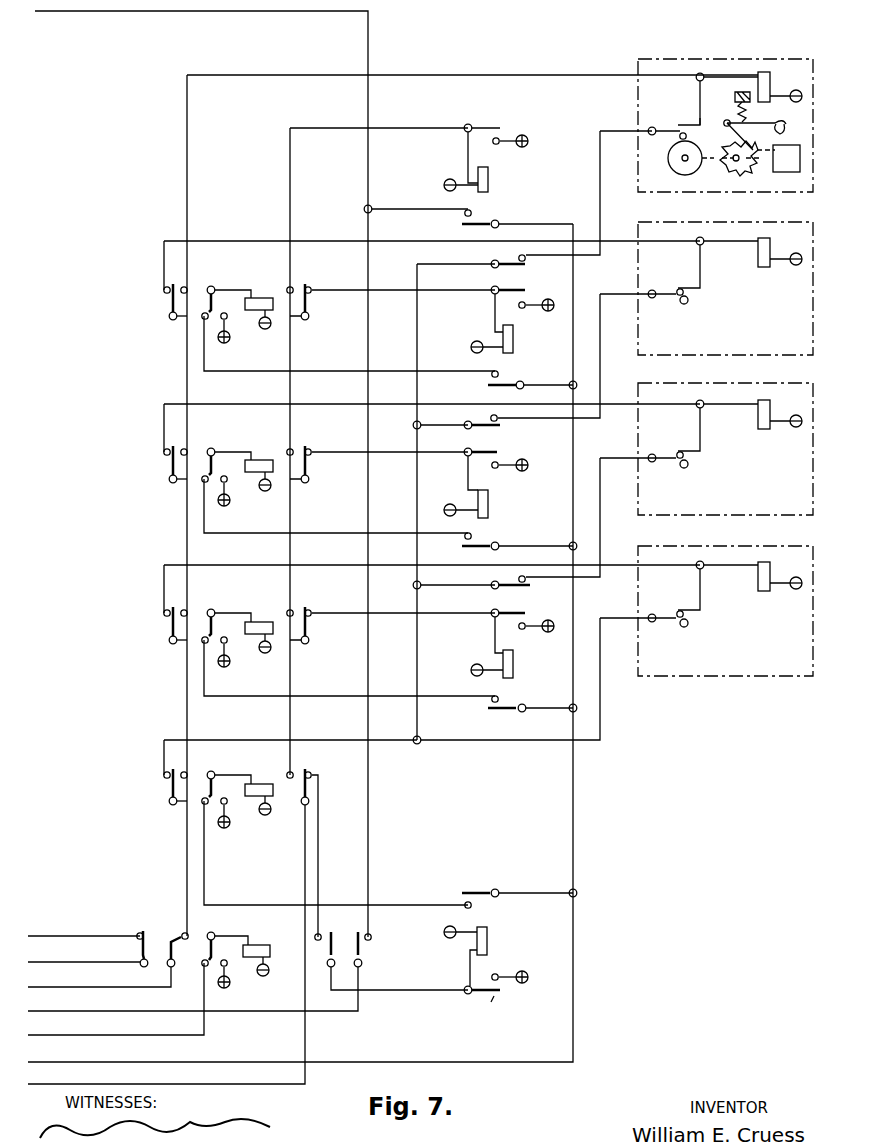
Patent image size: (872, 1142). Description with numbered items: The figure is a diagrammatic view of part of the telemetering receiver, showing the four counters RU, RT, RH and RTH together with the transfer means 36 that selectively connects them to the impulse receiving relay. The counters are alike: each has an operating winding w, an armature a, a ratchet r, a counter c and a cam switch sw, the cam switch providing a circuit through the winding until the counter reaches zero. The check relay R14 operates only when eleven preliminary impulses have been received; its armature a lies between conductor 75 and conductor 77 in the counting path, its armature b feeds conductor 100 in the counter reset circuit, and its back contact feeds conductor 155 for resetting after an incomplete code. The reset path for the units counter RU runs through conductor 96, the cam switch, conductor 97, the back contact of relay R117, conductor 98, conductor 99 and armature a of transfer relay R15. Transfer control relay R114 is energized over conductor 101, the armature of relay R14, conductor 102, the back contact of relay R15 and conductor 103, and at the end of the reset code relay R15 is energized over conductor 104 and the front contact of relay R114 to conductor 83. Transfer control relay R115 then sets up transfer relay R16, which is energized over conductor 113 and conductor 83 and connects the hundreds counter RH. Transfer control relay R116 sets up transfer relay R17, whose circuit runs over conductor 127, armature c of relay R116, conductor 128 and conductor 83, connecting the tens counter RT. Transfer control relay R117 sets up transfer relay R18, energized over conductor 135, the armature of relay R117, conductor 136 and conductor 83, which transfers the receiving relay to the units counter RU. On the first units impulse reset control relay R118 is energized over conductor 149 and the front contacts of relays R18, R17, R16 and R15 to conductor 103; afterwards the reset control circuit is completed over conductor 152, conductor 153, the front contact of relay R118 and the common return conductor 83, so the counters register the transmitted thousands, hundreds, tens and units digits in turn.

The transfer means 36 is at (420, 53).
The conductor 152 is at (367, 68).
The conductor 149 is at (393, 134).
The reset control relay R118 is at (472, 178).
The conductor 153 is at (437, 216).
The conductor 97 is at (601, 205).
The conductor 96 is at (700, 118).
The units counter RU is at (638, 100).
The tens counter RT is at (638, 273).
The hundreds counter RH is at (638, 444).
The thousands counter RTH is at (674, 677).
The transfer relay R18 is at (265, 296).
The transfer control relay R117 is at (500, 342).
The conductor 135 is at (238, 374).
The conductor 136 is at (526, 388).
The transfer relay R17 is at (265, 458).
The conductor 98 is at (417, 431).
The transfer control relay R116 is at (482, 500).
The conductor 127 is at (224, 537).
The conductor 128 is at (558, 548).
The transfer relay R16 is at (266, 620).
The transfer control relay R115 is at (502, 662).
The conductor 113 is at (306, 698).
The transfer relay R15 is at (262, 784).
The conductor 99 is at (417, 746).
The conductor 102 is at (318, 866).
The conductor 103 is at (305, 890).
The conductor 104 is at (260, 906).
The conductor 83 is at (575, 818).
The check relay R14 is at (267, 944).
The conductor 77 is at (98, 935).
The conductor 75 is at (88, 962).
The conductor 100 is at (110, 987).
The transfer control relay R114 is at (490, 967).
The conductor 101 is at (396, 990).
The conductor 155 is at (360, 1003).